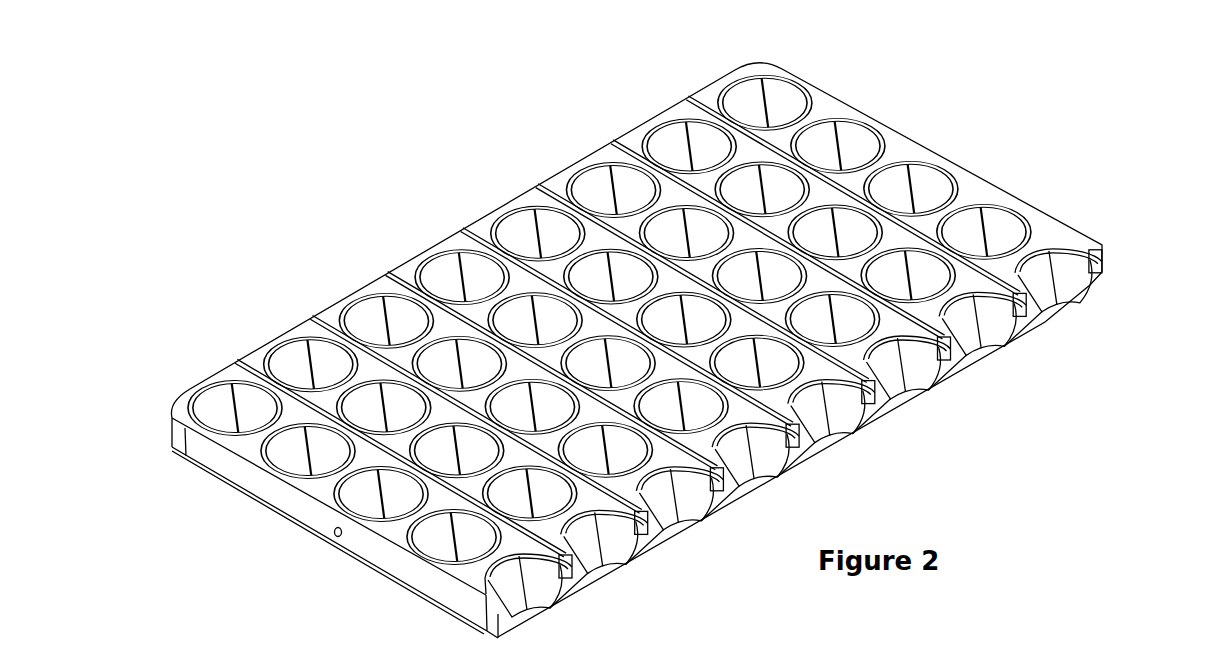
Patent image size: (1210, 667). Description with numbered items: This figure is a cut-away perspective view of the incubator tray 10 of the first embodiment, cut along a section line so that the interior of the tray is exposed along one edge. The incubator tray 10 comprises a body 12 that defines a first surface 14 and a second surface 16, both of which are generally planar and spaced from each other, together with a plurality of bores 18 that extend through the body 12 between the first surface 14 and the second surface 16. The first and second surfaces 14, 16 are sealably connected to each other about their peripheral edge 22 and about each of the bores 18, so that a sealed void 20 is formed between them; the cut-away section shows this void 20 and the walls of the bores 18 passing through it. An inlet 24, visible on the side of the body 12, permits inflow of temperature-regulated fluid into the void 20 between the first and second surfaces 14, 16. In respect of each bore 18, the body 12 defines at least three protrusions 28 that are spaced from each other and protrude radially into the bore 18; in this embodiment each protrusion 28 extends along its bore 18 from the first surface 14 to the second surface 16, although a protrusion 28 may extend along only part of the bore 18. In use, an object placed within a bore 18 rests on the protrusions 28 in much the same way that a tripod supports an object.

The incubator tray 10 is at (955, 121).
The body 12 is at (1057, 232).
The first surface 14 is at (527, 205).
The second surface 16 is at (645, 560).
The bores 18 is at (465, 540).
The sealed void 20 is at (878, 410).
The peripheral edge 22 is at (441, 594).
The inlet 24 is at (333, 540).
The protrusions 28 is at (758, 105).